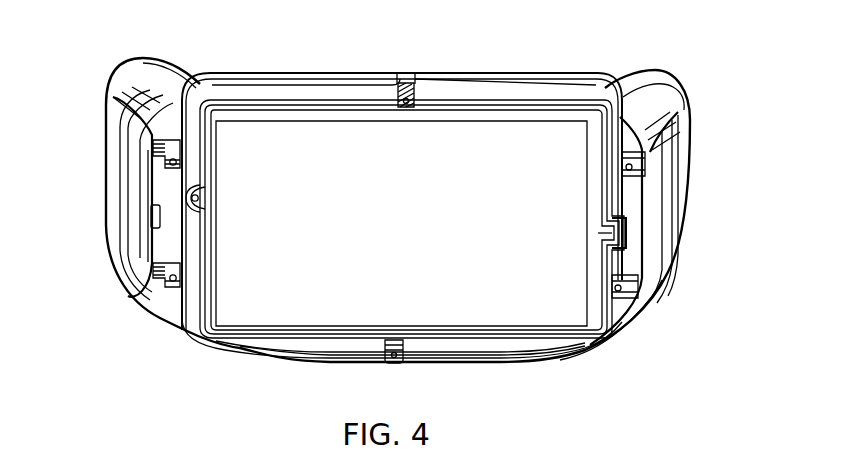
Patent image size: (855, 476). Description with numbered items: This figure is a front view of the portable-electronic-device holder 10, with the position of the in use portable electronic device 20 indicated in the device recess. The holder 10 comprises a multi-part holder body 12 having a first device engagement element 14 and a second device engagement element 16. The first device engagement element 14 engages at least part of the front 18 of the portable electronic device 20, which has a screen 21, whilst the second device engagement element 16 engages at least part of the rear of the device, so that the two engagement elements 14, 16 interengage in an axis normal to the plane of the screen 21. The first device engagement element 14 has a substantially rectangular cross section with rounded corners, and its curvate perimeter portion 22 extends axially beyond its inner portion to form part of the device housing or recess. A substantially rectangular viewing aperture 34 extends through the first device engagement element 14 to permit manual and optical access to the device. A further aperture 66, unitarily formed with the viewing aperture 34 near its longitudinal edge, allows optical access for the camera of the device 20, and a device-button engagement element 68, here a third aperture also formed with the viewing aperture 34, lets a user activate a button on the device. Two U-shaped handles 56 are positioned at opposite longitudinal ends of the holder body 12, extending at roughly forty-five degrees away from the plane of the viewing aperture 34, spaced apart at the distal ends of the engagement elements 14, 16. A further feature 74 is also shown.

The portable-electronic-device holder 10 is at (431, 216).
The holder body 12 is at (162, 325).
The first device engagement element 14 is at (312, 357).
The second device engagement element 16 is at (545, 82).
The front 18 is at (400, 337).
The portable electronic device 20 is at (541, 320).
The screen 21 is at (542, 163).
The perimeter portion 22 is at (618, 340).
The viewing aperture 34 is at (226, 270).
The handle 56 is at (112, 195).
The further aperture 66 is at (190, 196).
The device-button engagement element 68 is at (600, 234).
The upper clip 74 is at (408, 84).